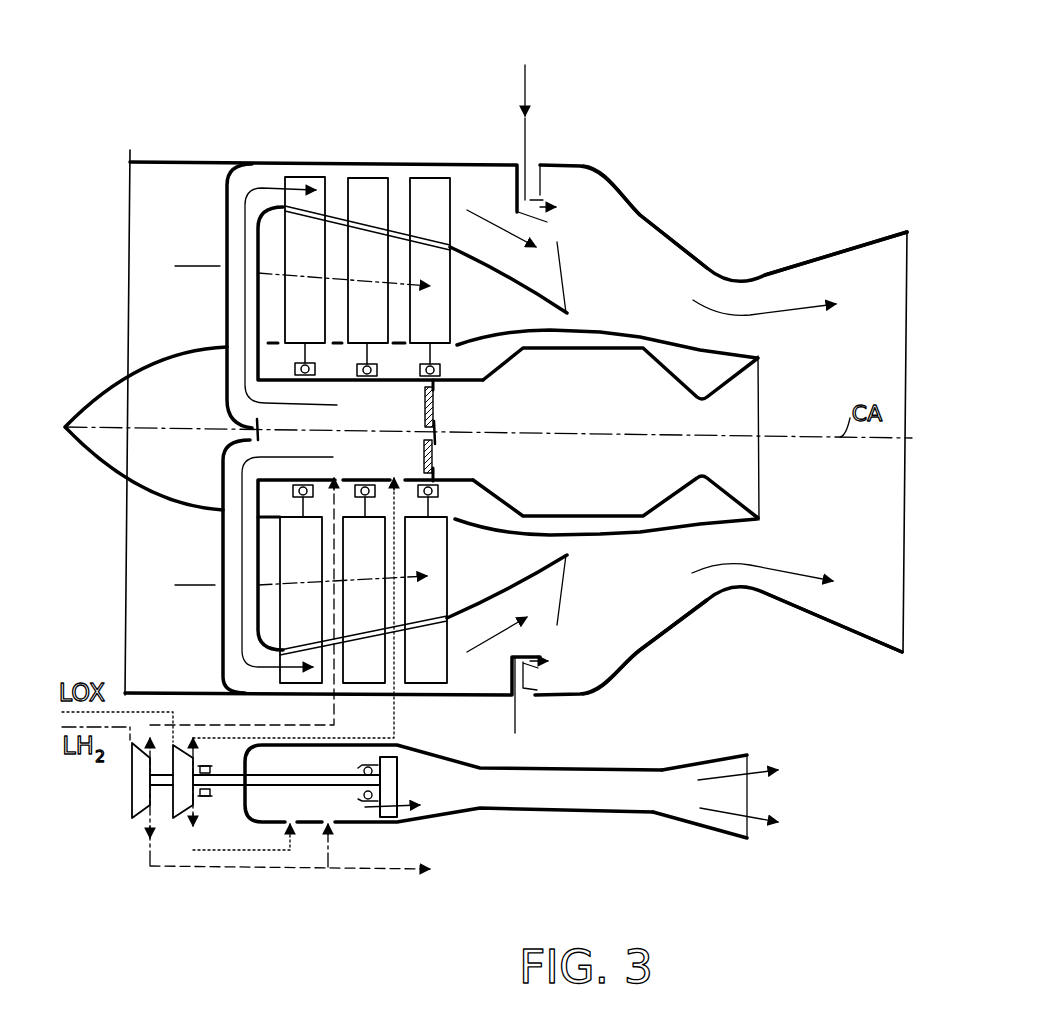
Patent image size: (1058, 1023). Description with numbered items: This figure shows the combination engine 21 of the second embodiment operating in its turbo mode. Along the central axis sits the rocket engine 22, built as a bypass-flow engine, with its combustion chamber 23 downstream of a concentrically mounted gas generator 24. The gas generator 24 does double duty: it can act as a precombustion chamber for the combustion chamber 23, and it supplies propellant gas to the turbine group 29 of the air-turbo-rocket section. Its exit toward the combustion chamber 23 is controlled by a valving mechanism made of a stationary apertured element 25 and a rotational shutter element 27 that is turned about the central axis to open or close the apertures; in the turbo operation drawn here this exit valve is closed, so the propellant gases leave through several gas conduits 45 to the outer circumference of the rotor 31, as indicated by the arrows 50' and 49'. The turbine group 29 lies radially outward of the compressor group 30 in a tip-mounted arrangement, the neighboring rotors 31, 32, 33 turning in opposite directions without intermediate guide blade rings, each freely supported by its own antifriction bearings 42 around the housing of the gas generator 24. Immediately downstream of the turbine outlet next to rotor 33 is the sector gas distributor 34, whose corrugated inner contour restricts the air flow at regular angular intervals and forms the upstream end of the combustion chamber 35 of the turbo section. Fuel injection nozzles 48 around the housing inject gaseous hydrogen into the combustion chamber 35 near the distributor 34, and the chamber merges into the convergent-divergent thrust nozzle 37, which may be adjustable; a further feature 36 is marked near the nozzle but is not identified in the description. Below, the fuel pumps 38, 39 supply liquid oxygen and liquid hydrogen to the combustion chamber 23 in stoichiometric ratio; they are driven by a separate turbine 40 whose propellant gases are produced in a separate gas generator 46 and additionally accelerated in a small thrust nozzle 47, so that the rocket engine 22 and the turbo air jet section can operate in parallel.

The combination engine 21 is at (606, 91).
The rocket engine 22 is at (683, 357).
The combustion chamber 23 is at (627, 383).
The gas generator 24 is at (390, 422).
The stationary apertured element 25 is at (433, 470).
The rotational shutter element 27 is at (433, 405).
The turbine group 29 is at (372, 353).
The compressor group 30 is at (337, 248).
The rotor 31 is at (326, 218).
The rotor 32 is at (372, 195).
The rotor 33 is at (432, 215).
The sector gas distributor 34 is at (543, 280).
The combustion chamber 35 is at (608, 250).
The nozzle throat region 36 is at (743, 400).
The convergent-divergent thrust nozzle 37 is at (820, 273).
The fuel pump 38 is at (183, 800).
The fuel pump 39 is at (132, 802).
The turbine 40 is at (388, 817).
The antifriction bearings 42 is at (378, 370).
The gas conduits 45 is at (233, 228).
The gas generator 46 is at (313, 822).
The thrust nozzle 47 is at (718, 822).
The fuel injection nozzles 48 is at (540, 198).
The arrow 49' is at (196, 405).
The arrow 50' is at (253, 427).